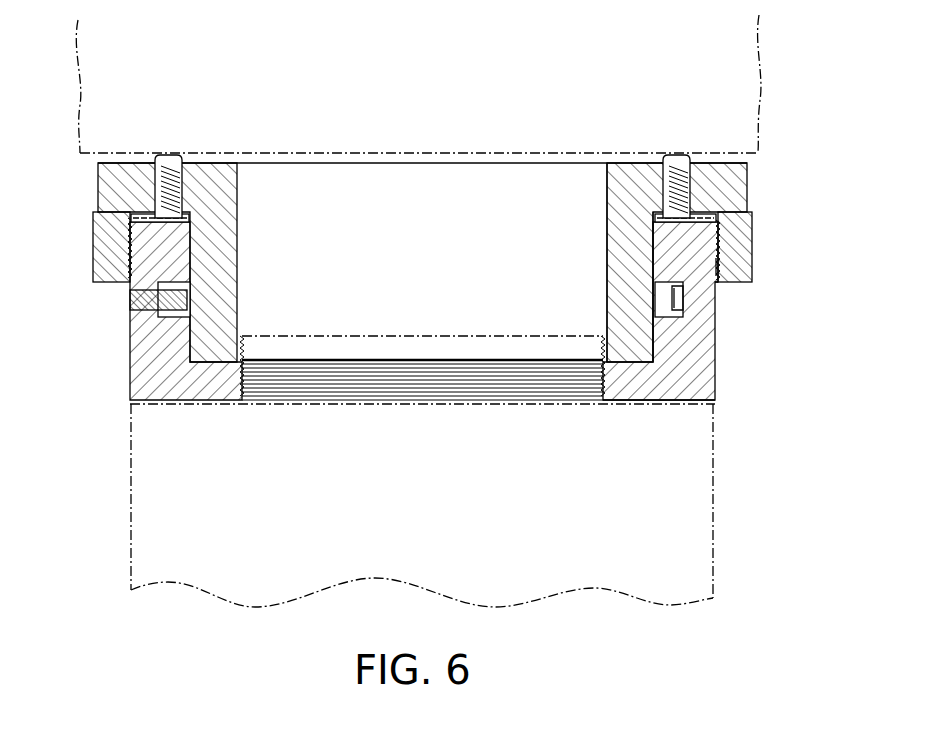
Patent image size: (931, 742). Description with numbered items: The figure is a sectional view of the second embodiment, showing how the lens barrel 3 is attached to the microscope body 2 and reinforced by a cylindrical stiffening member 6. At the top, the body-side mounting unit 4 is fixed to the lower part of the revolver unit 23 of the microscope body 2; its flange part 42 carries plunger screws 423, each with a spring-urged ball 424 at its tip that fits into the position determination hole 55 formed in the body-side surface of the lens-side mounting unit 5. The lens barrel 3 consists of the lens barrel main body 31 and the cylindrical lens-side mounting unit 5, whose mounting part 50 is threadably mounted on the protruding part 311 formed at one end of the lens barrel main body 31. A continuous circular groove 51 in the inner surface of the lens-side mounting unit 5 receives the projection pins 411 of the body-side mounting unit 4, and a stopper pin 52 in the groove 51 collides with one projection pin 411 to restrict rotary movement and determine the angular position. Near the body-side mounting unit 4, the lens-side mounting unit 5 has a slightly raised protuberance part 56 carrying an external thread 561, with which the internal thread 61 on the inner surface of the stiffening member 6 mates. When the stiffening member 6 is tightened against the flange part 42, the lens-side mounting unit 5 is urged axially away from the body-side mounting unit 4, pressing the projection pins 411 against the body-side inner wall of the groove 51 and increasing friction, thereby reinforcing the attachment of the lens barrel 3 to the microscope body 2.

The microscope body 2 is at (761, 28).
The revolver unit 23 is at (759, 63).
The lens barrel 3 is at (764, 431).
The lens barrel main body 31 is at (714, 462).
The protruding part 311 is at (510, 333).
The body-side mounting unit 4 is at (749, 167).
The flange part 42 is at (742, 191).
The plunger screw 423 is at (173, 158).
The ball 424 is at (162, 237).
The lens-side mounting unit 5 is at (716, 364).
The mounting part 50 is at (641, 402).
The groove 51 is at (700, 318).
The stopper pin 52 is at (165, 316).
The position determination hole 55 is at (655, 222).
The protuberance part 56 is at (716, 281).
The external thread 561 is at (718, 268).
The stiffening member 6 is at (754, 221).
The internal thread 61 is at (722, 248).
The projection pin 411 is at (688, 300).